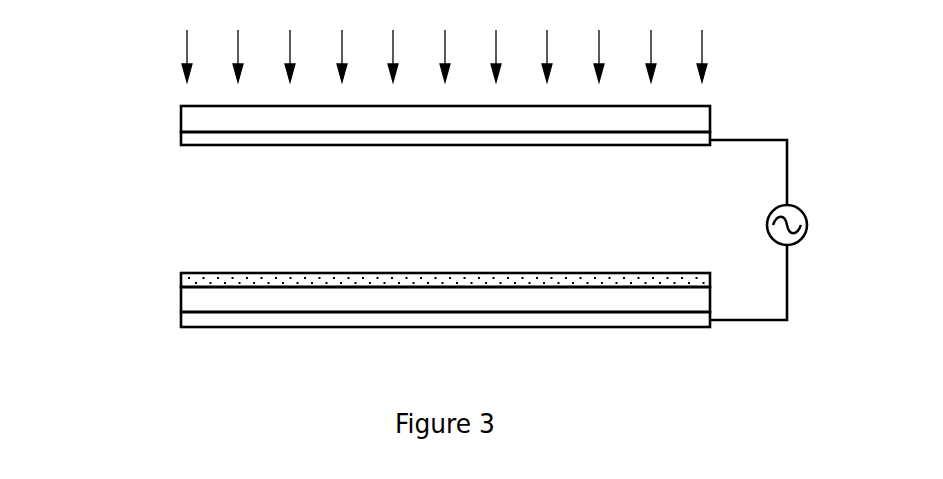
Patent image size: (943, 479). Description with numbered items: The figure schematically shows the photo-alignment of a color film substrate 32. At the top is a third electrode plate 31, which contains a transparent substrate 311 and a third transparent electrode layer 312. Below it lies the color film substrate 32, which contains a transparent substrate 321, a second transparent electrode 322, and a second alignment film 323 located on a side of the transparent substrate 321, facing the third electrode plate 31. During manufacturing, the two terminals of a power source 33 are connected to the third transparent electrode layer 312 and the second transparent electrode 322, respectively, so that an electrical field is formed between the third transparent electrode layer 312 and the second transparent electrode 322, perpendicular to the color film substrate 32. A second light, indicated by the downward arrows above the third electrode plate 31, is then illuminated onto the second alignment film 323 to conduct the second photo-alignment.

The third electrode plate 31 is at (372, 138).
The transparent substrate 311 is at (207, 118).
The third transparent electrode layer 312 is at (213, 138).
The color film substrate 32 is at (372, 295).
The transparent substrate 321 is at (207, 300).
The second transparent electrode 322 is at (399, 332).
The second alignment film 323 is at (399, 263).
The power source 33 is at (802, 211).